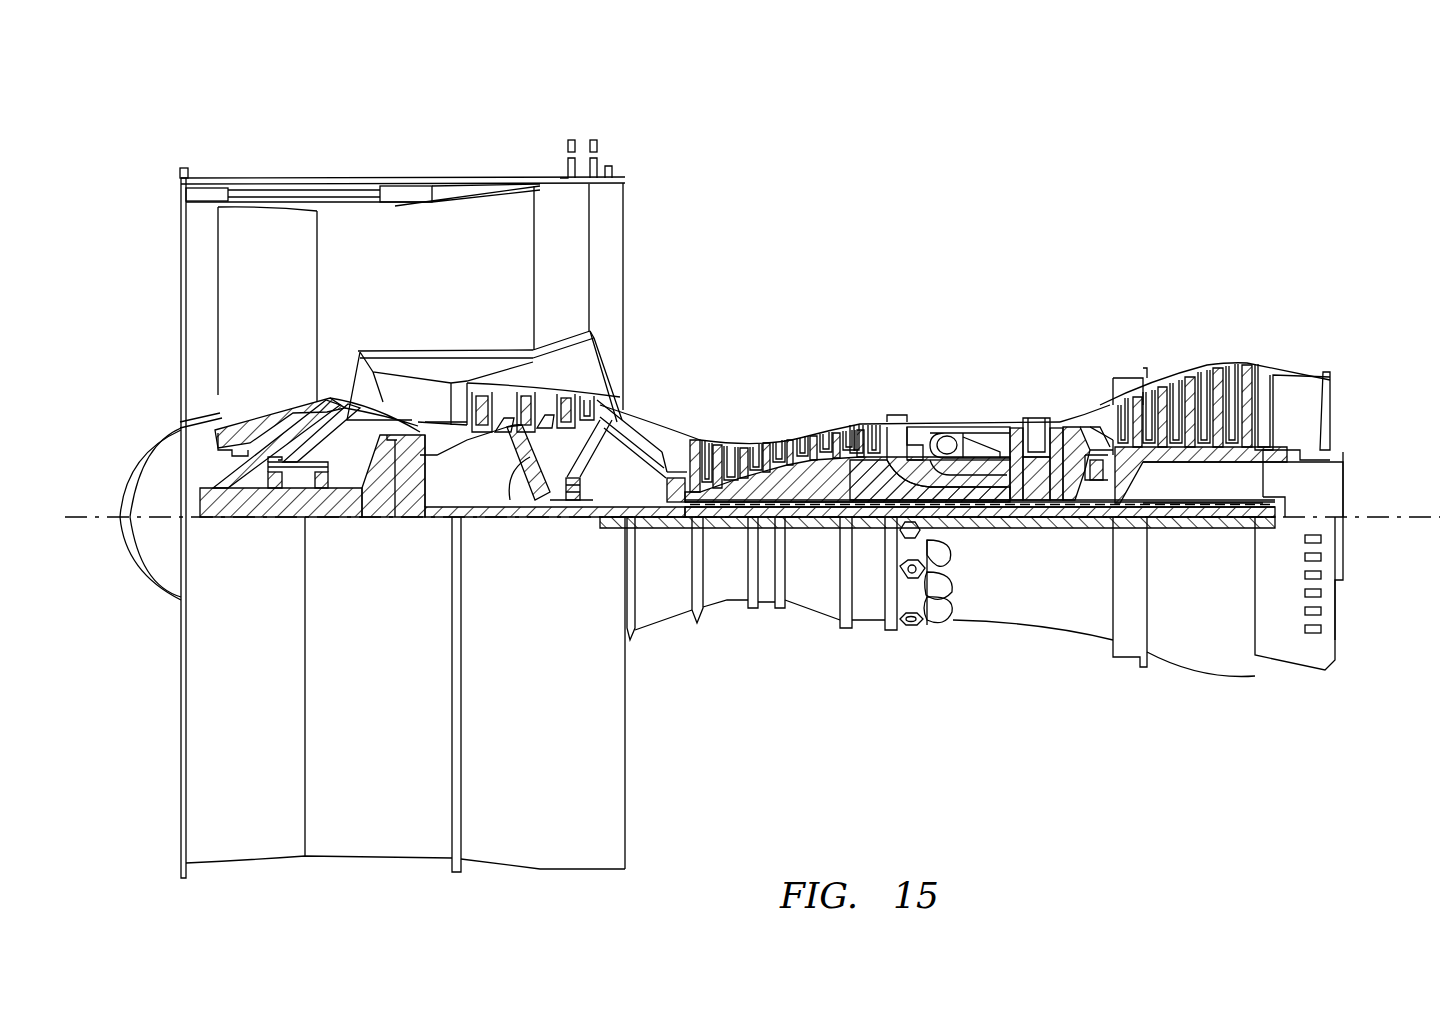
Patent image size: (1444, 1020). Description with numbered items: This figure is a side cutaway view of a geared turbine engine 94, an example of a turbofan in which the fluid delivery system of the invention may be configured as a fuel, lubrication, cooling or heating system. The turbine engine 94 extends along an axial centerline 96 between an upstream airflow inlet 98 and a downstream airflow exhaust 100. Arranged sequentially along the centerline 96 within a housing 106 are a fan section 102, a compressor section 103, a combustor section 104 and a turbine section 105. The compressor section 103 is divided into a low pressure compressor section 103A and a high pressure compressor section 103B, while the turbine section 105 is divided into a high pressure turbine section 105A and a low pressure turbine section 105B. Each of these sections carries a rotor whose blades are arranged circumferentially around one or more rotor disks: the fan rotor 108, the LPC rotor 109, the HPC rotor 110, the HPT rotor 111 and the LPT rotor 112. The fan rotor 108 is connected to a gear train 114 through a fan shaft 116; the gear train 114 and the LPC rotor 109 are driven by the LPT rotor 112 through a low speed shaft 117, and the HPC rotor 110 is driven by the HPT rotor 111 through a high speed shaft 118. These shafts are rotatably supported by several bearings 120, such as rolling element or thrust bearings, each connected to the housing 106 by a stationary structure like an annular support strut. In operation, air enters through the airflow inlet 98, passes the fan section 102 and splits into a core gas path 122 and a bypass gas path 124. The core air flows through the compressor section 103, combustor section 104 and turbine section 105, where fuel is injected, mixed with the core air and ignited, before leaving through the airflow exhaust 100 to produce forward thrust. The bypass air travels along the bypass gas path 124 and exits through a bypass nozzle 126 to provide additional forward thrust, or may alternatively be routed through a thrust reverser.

The turbine engine 94 is at (160, 104).
The axial centerline 96 is at (1395, 528).
The airflow inlet 98 is at (183, 290).
The airflow exhaust 100 is at (1332, 402).
The fan section 102 is at (365, 153).
The compressor section 103 is at (865, 72).
The low pressure compressor section 103A is at (625, 137).
The high pressure compressor section 103B is at (865, 343).
The combustor section 104 is at (1000, 343).
The turbine section 105 is at (1290, 268).
The high pressure turbine section 105A is at (1090, 343).
The low pressure turbine section 105B is at (1290, 343).
The housing 106 is at (692, 697).
The fan rotor 108 is at (210, 440).
The LPC rotor 109 is at (522, 518).
The HPC rotor 110 is at (815, 518).
The HPT rotor 111 is at (1032, 518).
The LPT rotor 112 is at (1192, 455).
The gear train 114 is at (386, 518).
The fan shaft 116 is at (258, 518).
The low speed shaft 117 is at (960, 518).
The high speed shaft 118 is at (958, 485).
The bearings 120 is at (316, 518).
The core gas path 122 is at (648, 434).
The bypass gas path 124 is at (468, 300).
The bypass nozzle 126 is at (623, 244).